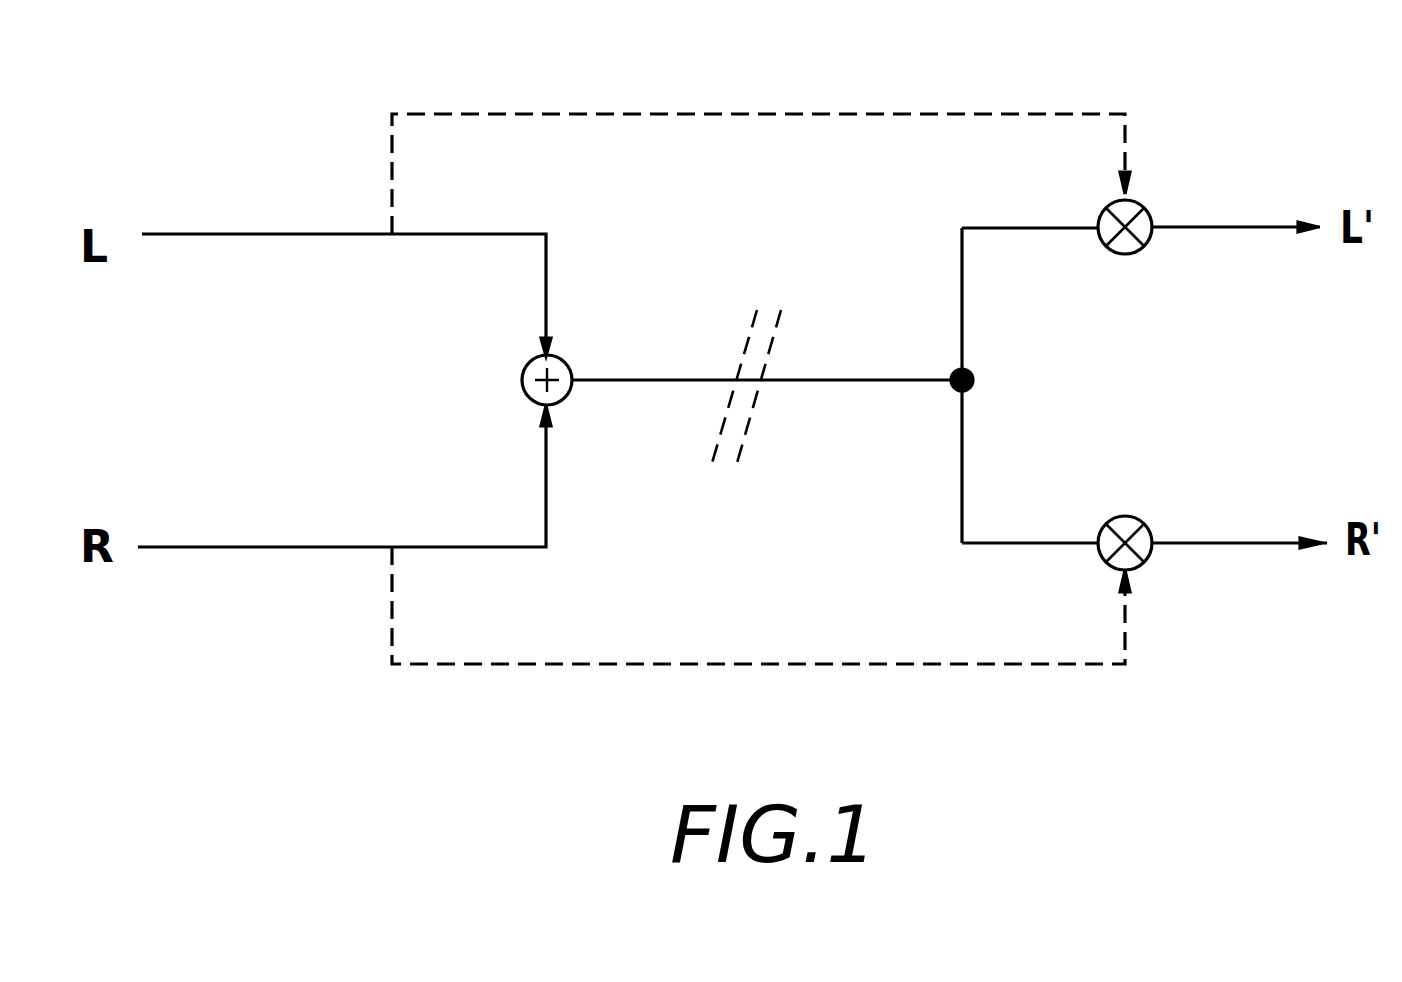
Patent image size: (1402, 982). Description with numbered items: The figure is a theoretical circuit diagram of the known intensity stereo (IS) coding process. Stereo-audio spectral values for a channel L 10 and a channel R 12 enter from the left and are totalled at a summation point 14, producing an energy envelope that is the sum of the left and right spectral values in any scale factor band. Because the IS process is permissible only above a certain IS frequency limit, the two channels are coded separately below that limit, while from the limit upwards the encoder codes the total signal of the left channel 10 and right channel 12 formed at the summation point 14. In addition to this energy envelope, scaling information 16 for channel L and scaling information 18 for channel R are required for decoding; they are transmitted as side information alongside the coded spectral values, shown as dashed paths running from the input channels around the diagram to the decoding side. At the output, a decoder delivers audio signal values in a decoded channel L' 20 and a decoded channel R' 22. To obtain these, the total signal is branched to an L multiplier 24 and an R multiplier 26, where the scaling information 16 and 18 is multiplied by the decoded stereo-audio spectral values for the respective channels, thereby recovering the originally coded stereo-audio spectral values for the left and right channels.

The channel L 10 is at (273, 236).
The channel R 12 is at (274, 546).
The summation point 14 is at (564, 362).
The scaling information for channel L 16 is at (808, 115).
The scaling information for channel R 18 is at (750, 662).
The decoded channel L' 20 is at (1215, 228).
The decoded channel R' 22 is at (1230, 548).
The L multiplier 24 is at (1119, 252).
The R multiplier 26 is at (1119, 517).